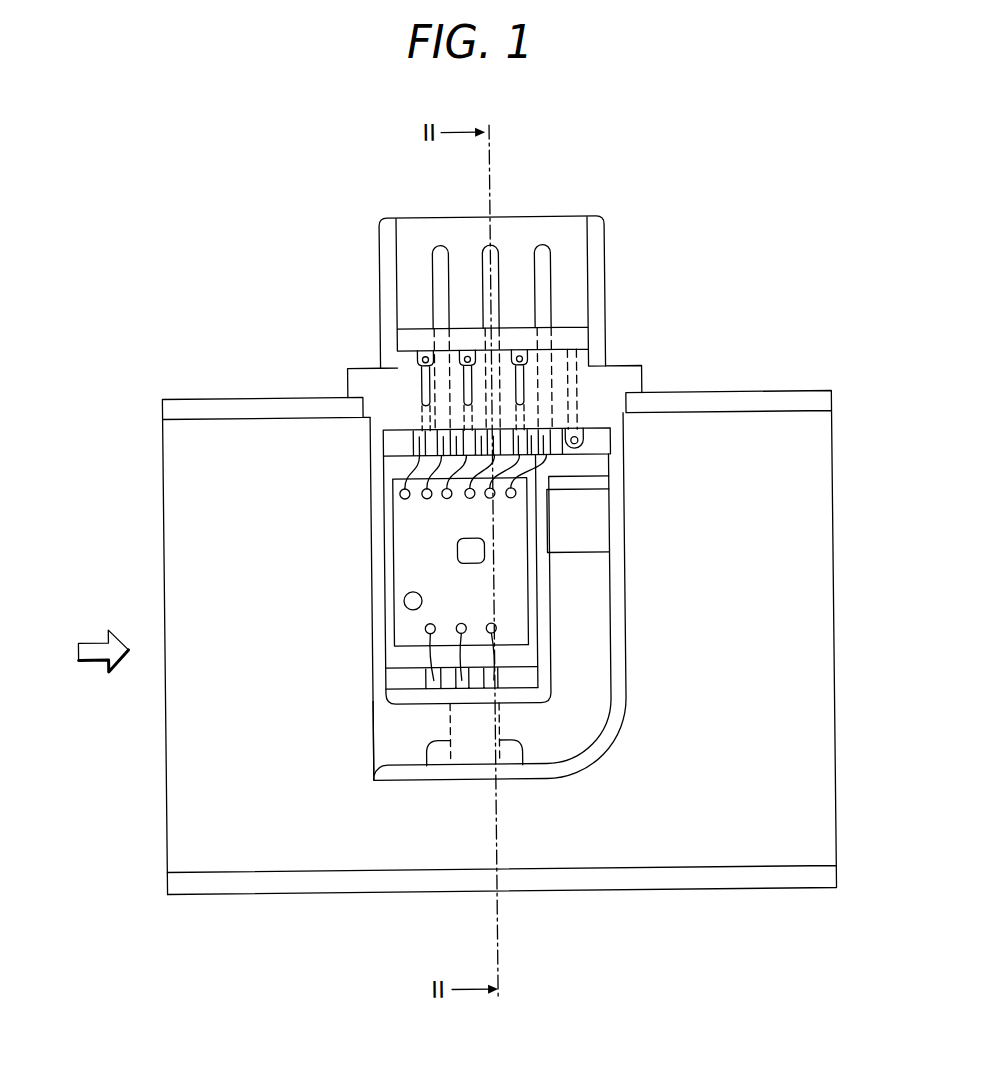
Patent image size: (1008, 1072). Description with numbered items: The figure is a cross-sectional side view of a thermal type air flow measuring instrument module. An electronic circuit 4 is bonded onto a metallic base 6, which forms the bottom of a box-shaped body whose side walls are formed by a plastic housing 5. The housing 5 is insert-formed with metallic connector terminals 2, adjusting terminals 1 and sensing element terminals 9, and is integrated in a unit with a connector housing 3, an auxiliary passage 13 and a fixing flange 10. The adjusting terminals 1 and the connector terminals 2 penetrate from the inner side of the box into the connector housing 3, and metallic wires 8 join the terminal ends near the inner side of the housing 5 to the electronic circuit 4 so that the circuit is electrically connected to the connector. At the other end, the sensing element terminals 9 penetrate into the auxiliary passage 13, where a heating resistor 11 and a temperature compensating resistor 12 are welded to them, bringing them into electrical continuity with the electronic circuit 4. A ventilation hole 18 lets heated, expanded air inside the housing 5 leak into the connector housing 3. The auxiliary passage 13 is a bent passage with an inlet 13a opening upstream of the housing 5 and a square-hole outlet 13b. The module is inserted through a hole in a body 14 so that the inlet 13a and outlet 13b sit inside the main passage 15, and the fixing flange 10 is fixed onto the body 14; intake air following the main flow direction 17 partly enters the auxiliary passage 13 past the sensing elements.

The adjusting terminals 1 is at (415, 356).
The connector terminals 2 is at (444, 245).
The connector housing 3 is at (599, 248).
The electronic circuit 4 is at (416, 558).
The housing 5 is at (378, 588).
The metallic base 6 is at (588, 469).
The metallic wires 8 is at (395, 463).
The sensing element terminals 9 is at (423, 680).
The fixing flange 10 is at (352, 368).
The heating resistor 11 is at (424, 766).
The temperature compensating resistor 12 is at (521, 768).
The auxiliary passage 13 is at (594, 713).
The inlet 13a is at (374, 738).
The outlet 13b is at (590, 539).
The body 14 is at (232, 407).
The main passage 15 is at (759, 671).
The main flow direction 17 is at (95, 648).
The ventilation hole 18 is at (577, 387).